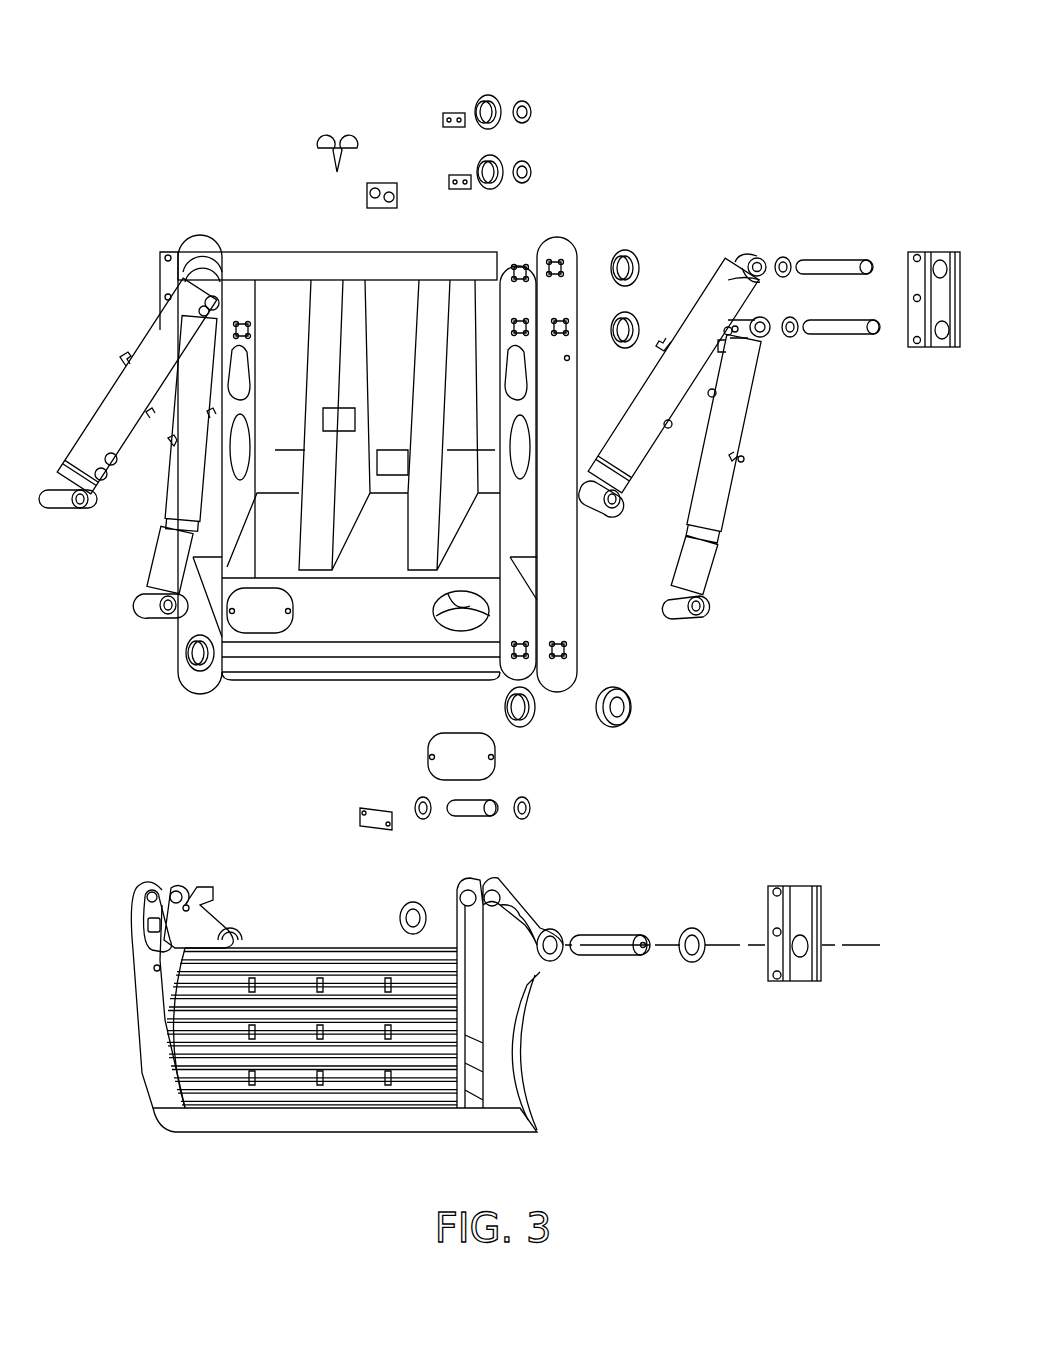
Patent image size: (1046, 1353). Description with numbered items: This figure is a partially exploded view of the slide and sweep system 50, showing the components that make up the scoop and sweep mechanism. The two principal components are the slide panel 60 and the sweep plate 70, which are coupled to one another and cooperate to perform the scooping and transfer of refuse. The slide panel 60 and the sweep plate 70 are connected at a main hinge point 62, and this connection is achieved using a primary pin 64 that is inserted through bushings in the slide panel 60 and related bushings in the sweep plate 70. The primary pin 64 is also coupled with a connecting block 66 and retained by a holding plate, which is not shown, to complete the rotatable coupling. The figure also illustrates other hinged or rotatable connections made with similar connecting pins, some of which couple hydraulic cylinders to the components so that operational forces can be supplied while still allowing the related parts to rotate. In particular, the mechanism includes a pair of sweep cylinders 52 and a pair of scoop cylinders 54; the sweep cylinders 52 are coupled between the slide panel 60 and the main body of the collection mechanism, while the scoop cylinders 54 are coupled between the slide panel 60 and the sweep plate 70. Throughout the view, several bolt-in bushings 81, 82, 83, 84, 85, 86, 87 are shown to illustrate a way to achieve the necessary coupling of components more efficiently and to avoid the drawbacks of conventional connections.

The slide and sweep system 50 is at (745, 140).
The sweep cylinders 52 is at (108, 413).
The scoop cylinders 54 is at (178, 510).
The slide panel 60 is at (262, 262).
The main hinge point 62 is at (562, 652).
The primary pin 64 is at (617, 929).
The connecting block 66 is at (800, 885).
The sweep plate 70 is at (493, 1005).
The bolt-in bushing 81 is at (490, 95).
The bolt-in bushing 82 is at (497, 185).
The bolt-in bushing 83 is at (628, 248).
The bolt-in bushing 84 is at (640, 318).
The bolt-in bushing 85 is at (530, 720).
The bolt-in bushing 86 is at (625, 718).
The bolt-in bushing 87 is at (197, 673).